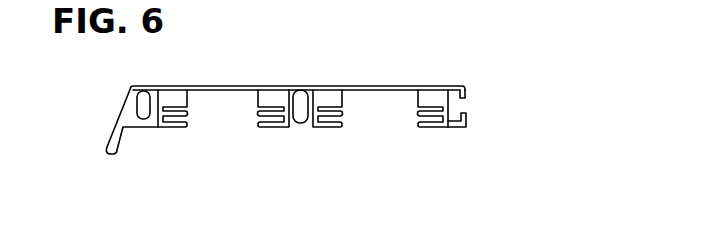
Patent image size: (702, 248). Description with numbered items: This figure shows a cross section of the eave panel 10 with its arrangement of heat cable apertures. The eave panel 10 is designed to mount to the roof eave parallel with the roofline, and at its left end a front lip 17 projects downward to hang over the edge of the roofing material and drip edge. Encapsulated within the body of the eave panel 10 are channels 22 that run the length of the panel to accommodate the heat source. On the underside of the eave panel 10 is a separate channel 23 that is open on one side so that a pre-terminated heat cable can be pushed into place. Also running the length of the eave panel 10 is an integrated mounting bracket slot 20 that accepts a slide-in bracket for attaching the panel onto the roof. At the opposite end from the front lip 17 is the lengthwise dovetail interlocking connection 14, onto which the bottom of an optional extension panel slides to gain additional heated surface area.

The eave panel 10 is at (243, 85).
The dovetail interlocking connection 14 is at (466, 110).
The front lip 17 is at (115, 148).
The mounting bracket slot 20 is at (193, 120).
The channels 22 is at (150, 105).
The channel 23 is at (170, 97).